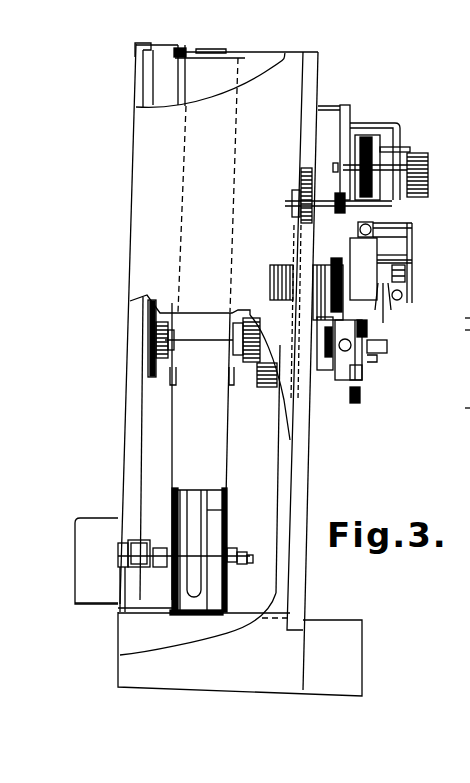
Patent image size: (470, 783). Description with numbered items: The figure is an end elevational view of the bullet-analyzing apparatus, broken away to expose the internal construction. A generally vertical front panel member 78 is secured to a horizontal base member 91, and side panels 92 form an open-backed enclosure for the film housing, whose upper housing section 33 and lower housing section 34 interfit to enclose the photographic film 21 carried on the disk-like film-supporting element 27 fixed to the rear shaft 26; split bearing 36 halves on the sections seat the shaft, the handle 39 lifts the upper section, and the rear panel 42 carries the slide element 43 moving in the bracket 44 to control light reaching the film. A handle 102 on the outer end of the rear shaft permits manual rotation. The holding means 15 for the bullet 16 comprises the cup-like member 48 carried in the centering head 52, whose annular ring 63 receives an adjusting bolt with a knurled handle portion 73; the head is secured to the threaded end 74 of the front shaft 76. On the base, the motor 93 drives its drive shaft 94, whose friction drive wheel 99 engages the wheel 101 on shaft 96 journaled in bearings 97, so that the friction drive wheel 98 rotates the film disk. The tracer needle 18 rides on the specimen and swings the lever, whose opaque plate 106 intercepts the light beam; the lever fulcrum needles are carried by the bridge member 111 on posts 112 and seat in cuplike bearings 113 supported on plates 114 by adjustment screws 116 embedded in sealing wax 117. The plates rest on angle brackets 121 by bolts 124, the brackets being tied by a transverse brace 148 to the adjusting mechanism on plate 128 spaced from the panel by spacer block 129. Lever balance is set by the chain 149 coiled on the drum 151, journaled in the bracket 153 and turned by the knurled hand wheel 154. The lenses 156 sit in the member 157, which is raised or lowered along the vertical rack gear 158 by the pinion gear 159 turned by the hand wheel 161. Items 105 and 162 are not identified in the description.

The holding means 15 is at (373, 383).
The bullet 16 is at (387, 347).
The needle 18 is at (368, 329).
The photographic film 21 is at (198, 492).
The rear shaft 26 is at (172, 347).
The film-supporting element 27 is at (208, 513).
The upper housing section 33 is at (240, 70).
The lower housing section 34 is at (231, 455).
The split bearing 36 is at (229, 382).
The handle 39 is at (222, 50).
The rear panel 42 is at (172, 496).
The slide element 43 is at (180, 48).
The bracket 44 is at (185, 90).
The cup-like member 48 is at (376, 361).
The centering head 52 is at (340, 366).
The annular ring 63 is at (362, 372).
The knurled handle portion 73 is at (358, 403).
The threaded end 74 is at (316, 340).
The front shaft 76 is at (250, 320).
The front panel member 78 is at (311, 55).
The base member 91 is at (240, 648).
The side panels 92 is at (160, 173).
The motor 93 is at (75, 540).
The drive shaft 94 is at (118, 550).
The shaft 96 is at (246, 560).
The bearings 97 is at (235, 584).
The friction drive wheel 98 is at (178, 616).
The friction drive wheel 99 is at (148, 540).
The friction drive wheel 101 is at (138, 567).
The handle 102 is at (148, 367).
The arm 105 is at (460, 310).
The opaque plate 106 is at (390, 313).
The bridge member 111 is at (410, 257).
The posts 112 is at (380, 264).
The cuplike bearings 113 is at (459, 327).
The plates 114 is at (405, 276).
The adjustment screws 116 is at (459, 405).
The sealing wax 117 is at (413, 236).
The angle brackets 121 is at (412, 262).
The bolts 124 is at (402, 295).
The plate 128 is at (373, 223).
The spacer block 129 is at (292, 223).
The transverse brace 148 is at (412, 225).
The chain 149 is at (385, 140).
The drum 151 is at (400, 147).
The bracket 153 is at (350, 120).
The knurled hand wheel 154 is at (428, 156).
The lenses 156 is at (280, 265).
The member 157 is at (317, 400).
The vertical rack gear 158 is at (295, 190).
The pinion gear 159 is at (301, 186).
The hand wheel 161 is at (340, 214).
The rack 162 is at (328, 266).